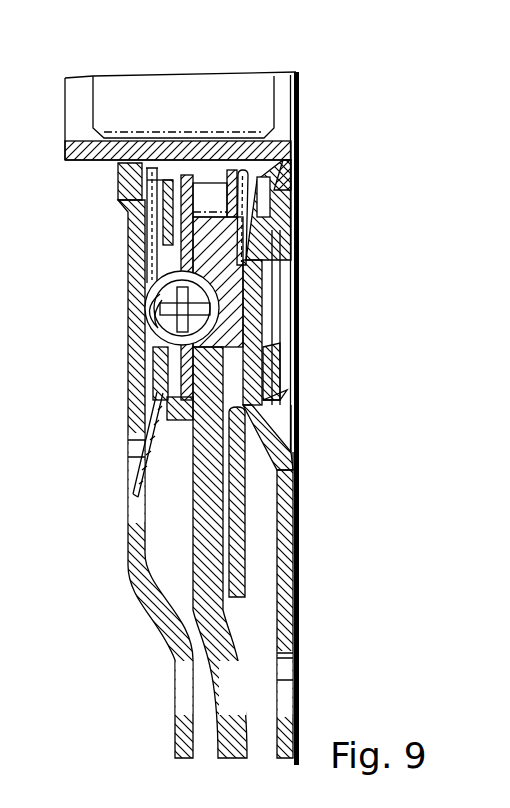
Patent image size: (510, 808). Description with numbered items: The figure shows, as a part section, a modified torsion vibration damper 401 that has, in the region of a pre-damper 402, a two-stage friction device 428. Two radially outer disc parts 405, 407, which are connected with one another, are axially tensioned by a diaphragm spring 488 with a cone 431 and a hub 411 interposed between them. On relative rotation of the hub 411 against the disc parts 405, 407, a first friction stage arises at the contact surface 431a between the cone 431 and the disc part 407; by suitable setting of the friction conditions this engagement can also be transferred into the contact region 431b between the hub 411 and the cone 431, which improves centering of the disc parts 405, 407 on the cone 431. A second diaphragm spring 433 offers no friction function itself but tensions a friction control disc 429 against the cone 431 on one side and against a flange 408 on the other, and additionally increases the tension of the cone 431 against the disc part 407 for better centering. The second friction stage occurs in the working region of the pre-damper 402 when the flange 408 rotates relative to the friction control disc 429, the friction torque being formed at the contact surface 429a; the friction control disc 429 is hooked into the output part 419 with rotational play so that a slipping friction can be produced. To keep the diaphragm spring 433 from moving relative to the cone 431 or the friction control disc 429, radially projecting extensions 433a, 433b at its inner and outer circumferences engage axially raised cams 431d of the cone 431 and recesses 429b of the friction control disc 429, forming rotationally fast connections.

The torsion vibration damper 401 is at (231, 58).
The cone 431 is at (299, 138).
The axially raised cams 431d is at (205, 172).
The contact region 431b is at (265, 170).
The contact surface 431a is at (286, 190).
The diaphragm spring 433 is at (276, 214).
The radially projecting extension 433b is at (298, 158).
The radially projecting extension 433a is at (230, 273).
The friction device 428 is at (283, 226).
The pre-damper 402 is at (268, 322).
The hub 411 is at (97, 161).
The output part 419 is at (150, 228).
The diaphragm spring 488 is at (162, 254).
The friction control disc 429 is at (222, 300).
The contact surface 429a is at (165, 283).
The recesses 429b is at (153, 310).
The disc part 405 is at (137, 594).
The disc part 407 is at (287, 468).
The flange 408 is at (214, 524).